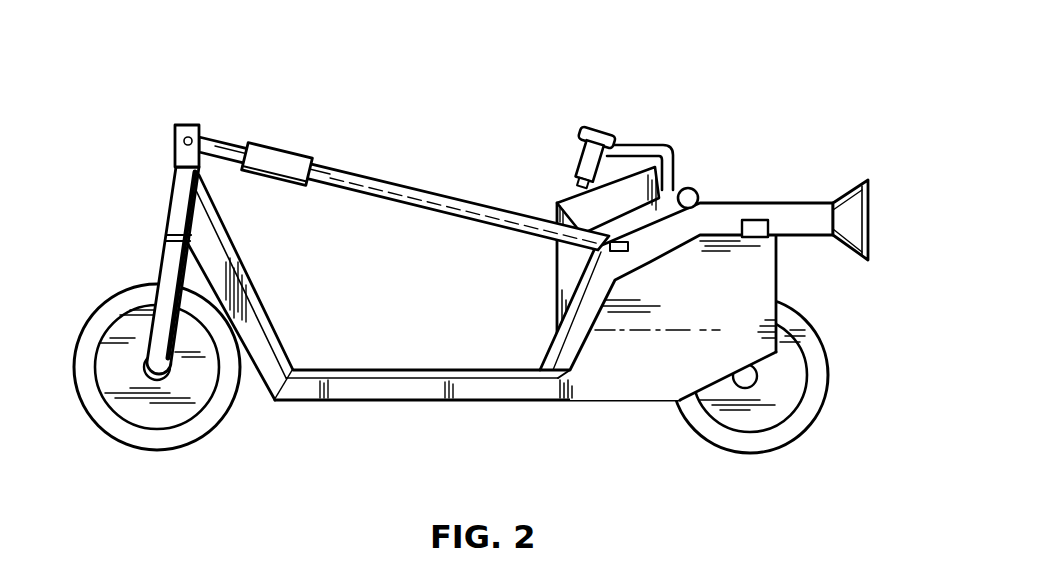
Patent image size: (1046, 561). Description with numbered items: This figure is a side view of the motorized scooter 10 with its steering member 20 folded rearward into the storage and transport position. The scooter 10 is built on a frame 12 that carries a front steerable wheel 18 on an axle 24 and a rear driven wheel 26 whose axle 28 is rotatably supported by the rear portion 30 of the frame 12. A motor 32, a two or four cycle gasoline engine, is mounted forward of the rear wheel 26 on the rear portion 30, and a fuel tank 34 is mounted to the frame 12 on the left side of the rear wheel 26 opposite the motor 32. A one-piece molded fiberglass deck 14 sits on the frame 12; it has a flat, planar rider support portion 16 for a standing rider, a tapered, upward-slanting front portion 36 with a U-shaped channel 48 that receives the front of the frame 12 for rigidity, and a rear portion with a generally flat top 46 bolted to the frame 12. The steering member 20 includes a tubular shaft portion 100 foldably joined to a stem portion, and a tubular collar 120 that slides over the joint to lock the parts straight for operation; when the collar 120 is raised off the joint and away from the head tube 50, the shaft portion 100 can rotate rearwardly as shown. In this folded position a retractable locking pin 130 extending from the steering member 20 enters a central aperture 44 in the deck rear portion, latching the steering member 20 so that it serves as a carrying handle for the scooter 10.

The scooter 10 is at (428, 103).
The frame 12 is at (409, 410).
The deck 14 is at (536, 348).
The rider support portion 16 is at (368, 369).
The front steerable wheel 18 is at (123, 300).
The steering member 20 is at (450, 181).
The axle 24 is at (159, 374).
The rear driven wheel 26 is at (808, 333).
The axle 28 is at (752, 386).
The rear portion 30 is at (651, 410).
The motor 32 is at (630, 158).
The fuel tank 34 is at (753, 278).
The front portion 36 is at (243, 249).
The central aperture 44 is at (606, 242).
The flat top 46 is at (767, 203).
The channel 48 is at (258, 292).
The head tube 50 is at (173, 203).
The tubular shaft portion 100 is at (330, 173).
The tubular collar 120 is at (278, 152).
The retractable locking pin 130 is at (573, 352).